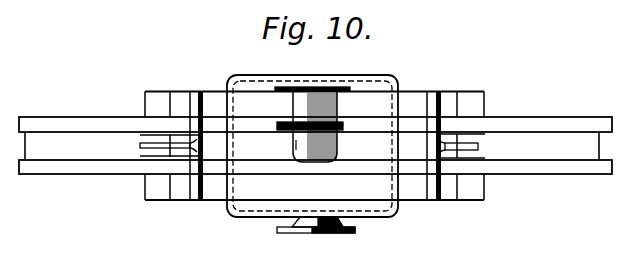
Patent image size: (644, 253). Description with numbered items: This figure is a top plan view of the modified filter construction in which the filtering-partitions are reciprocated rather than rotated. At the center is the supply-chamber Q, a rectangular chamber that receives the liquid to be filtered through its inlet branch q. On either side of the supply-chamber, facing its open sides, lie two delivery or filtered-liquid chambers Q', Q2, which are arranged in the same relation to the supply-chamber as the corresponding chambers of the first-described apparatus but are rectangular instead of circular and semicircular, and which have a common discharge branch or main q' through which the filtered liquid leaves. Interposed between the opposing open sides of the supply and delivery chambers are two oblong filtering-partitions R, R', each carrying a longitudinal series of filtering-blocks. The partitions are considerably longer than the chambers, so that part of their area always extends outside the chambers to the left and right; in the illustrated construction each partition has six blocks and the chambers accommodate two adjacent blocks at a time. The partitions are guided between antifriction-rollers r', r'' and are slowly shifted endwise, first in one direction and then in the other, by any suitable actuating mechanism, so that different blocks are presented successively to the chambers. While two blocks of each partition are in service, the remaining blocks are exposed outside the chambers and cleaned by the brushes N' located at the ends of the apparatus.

The filtering-partition R is at (315, 126).
The filtering-partition R' is at (315, 178).
The brushes N' is at (308, 146).
The antifriction-rollers r' is at (215, 126).
The rail portion r'' is at (331, 145).
The supply-chamber Q is at (312, 146).
The delivery chamber Q' is at (314, 125).
The delivery chamber Q2 is at (379, 209).
The inlet branch q is at (293, 157).
The discharge branch q' is at (320, 239).